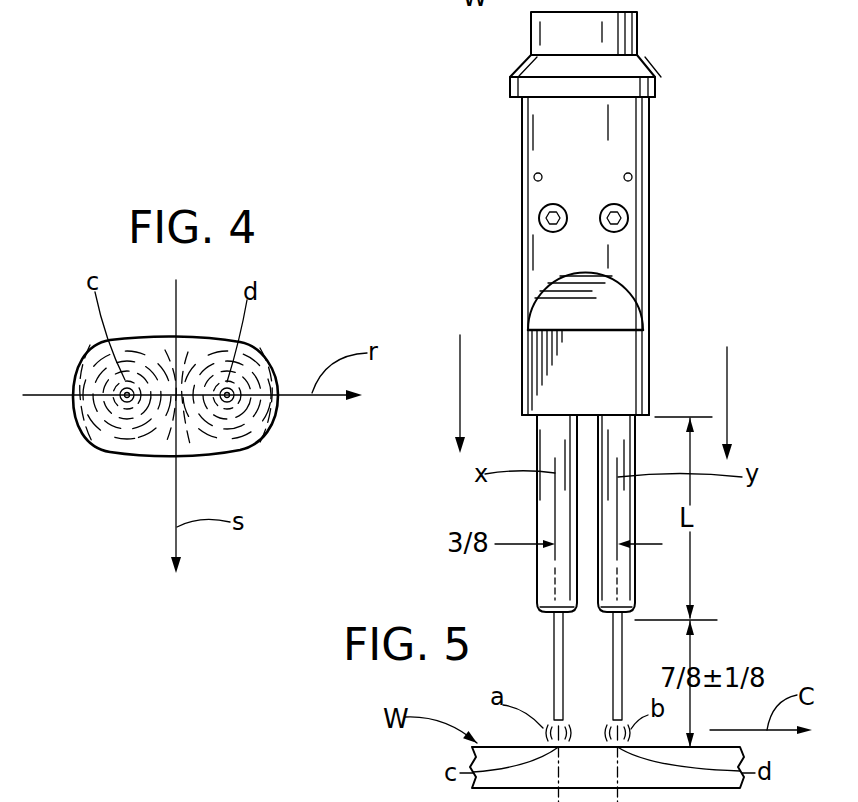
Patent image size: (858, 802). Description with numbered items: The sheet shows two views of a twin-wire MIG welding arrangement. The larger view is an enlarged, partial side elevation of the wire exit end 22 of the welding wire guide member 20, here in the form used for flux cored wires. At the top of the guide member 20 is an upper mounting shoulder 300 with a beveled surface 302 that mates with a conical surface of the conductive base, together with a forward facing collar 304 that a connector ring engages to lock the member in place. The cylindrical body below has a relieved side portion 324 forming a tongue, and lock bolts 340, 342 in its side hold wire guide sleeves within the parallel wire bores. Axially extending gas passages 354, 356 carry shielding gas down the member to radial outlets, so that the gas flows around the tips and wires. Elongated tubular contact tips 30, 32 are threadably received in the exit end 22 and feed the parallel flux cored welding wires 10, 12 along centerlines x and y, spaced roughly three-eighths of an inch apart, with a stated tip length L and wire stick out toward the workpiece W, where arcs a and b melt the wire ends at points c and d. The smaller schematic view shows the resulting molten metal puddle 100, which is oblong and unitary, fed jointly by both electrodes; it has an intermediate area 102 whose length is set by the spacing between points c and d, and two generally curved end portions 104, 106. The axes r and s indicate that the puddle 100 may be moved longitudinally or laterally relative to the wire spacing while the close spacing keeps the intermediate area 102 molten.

In FIG. 4, the welding wire 10 is at (123, 407).
In FIG. 5, the welding wire 10 is at (554, 638).
In FIG. 4, the welding wire 12 is at (227, 407).
In FIG. 5, the welding wire 12 is at (613, 657).
In FIG. 5, the welding wire guide member 20 is at (652, 252).
In FIG. 5, the wire exit end 22 is at (652, 407).
In FIG. 5, the tubular tip 30 is at (537, 505).
In FIG. 5, the tubular tip 32 is at (635, 498).
In FIG. 4, the molten metal puddle 100 is at (258, 345).
In FIG. 4, the intermediate area 102 is at (170, 433).
In FIG. 4, the curved end portion 104 is at (85, 367).
In FIG. 4, the curved end portion 106 is at (278, 372).
In FIG. 5, the shoulder 300 is at (657, 85).
In FIG. 5, the beveled surface 302 is at (647, 62).
In FIG. 5, the collar 304 is at (548, 97).
In FIG. 5, the relieved side portion 324 is at (565, 303).
In FIG. 5, the lock bolt 340 is at (540, 217).
In FIG. 5, the lock bolt 342 is at (620, 212).
In FIG. 5, the gas passage 354 is at (633, 175).
In FIG. 5, the gas passage 356 is at (533, 175).